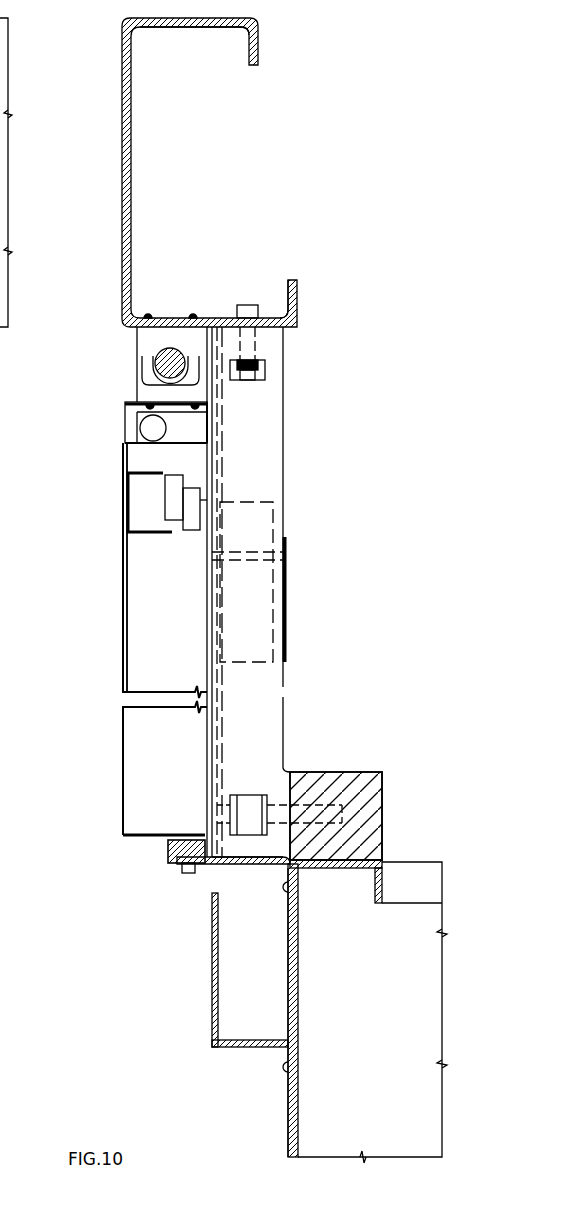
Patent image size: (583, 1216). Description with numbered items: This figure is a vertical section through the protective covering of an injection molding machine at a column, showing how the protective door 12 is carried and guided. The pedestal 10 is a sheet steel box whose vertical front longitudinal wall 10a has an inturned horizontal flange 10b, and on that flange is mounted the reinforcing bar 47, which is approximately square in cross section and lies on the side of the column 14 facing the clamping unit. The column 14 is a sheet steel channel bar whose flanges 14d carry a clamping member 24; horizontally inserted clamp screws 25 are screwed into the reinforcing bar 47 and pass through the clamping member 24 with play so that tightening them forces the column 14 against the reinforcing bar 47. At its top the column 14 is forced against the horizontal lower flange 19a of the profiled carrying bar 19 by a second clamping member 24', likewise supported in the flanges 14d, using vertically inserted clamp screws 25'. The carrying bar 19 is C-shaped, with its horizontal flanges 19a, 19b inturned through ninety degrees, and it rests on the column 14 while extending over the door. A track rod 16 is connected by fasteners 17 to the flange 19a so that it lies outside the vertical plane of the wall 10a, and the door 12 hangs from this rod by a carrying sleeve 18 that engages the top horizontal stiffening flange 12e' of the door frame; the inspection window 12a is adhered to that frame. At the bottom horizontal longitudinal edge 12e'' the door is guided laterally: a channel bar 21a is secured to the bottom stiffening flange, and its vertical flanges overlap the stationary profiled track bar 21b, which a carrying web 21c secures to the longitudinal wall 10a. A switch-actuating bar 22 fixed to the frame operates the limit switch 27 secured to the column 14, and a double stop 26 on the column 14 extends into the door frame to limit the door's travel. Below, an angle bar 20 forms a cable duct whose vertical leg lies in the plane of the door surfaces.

The pedestal 10 is at (280, 1135).
The front longitudinal wall 10a is at (280, 1010).
The inturned horizontal flange 10b is at (337, 870).
The protective door 12 is at (115, 559).
The inspection window 12a is at (123, 622).
The horizontal stiffening flange 12e' is at (108, 465).
The bottom horizontal longitudinal edge 12e'' is at (107, 807).
The column 14 is at (293, 439).
The flange 14d is at (243, 475).
The track rod 16 is at (148, 376).
The fastener 17 is at (137, 338).
The carrying sleeve 18 is at (150, 422).
The profiled carrying bar 19 is at (114, 247).
The horizontal lower flange 19a is at (150, 354).
The horizontal flange 19b is at (187, 28).
The angle bar 20 is at (290, 1005).
The channel bar 21a is at (175, 850).
The profiled track bar 21b is at (172, 864).
The carrying web 21c is at (217, 867).
The switch-actuating bar 22 is at (128, 530).
The clamping member 24 is at (287, 747).
The clamping member 24' is at (315, 360).
The clamp screw 25 is at (336, 785).
The clamp screw 25' is at (320, 323).
The double stop 26 is at (193, 427).
The limit switch 27 is at (248, 606).
The reinforcing bar 47 is at (363, 793).